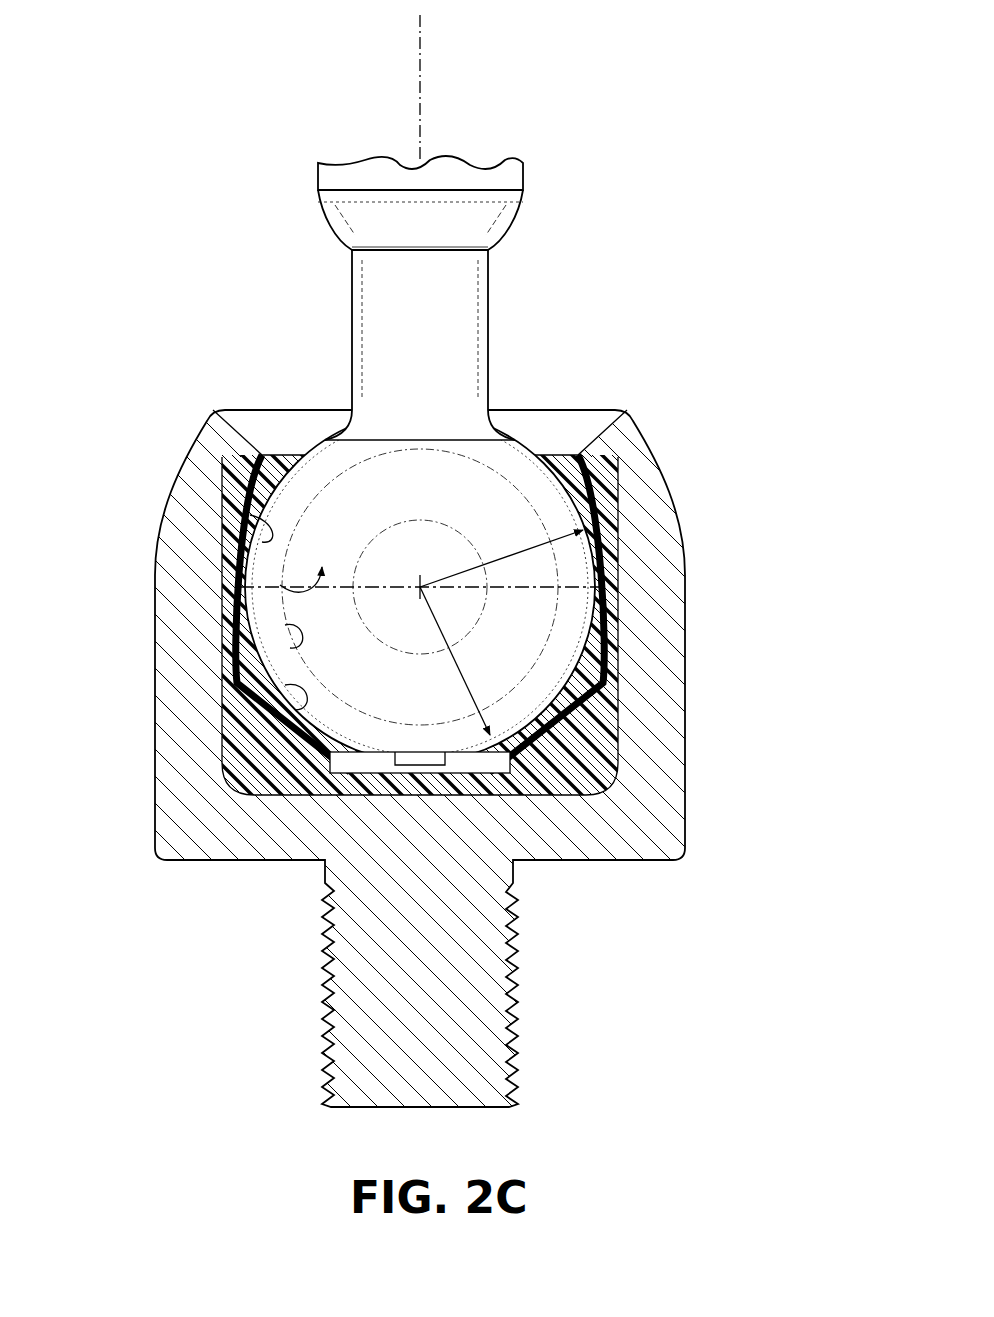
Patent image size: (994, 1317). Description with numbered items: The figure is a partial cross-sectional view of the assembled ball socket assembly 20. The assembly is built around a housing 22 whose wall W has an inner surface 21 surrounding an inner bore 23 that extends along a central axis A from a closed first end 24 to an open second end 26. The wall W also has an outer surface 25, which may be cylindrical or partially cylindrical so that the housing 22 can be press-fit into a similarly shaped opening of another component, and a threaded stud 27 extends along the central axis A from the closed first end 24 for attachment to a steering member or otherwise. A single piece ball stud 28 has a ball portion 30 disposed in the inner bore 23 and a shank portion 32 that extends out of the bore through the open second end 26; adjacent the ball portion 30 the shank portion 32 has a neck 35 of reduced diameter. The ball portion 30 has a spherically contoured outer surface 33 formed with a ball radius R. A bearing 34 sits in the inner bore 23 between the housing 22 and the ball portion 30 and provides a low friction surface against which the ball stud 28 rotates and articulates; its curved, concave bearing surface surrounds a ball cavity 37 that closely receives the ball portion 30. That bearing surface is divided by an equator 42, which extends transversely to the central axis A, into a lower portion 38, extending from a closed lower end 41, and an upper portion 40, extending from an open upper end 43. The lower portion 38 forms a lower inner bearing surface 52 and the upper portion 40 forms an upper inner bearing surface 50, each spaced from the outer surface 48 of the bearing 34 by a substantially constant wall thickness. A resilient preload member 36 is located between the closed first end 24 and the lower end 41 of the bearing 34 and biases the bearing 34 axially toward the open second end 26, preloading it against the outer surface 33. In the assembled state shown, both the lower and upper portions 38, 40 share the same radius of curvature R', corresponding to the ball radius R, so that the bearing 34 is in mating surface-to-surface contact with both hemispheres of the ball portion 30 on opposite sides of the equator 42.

The central axis A is at (420, 78).
The ball socket assembly 20 is at (706, 244).
The inner surface 21 is at (262, 540).
The housing 22 is at (690, 755).
The inner bore 23 is at (316, 403).
The closed first end 24 is at (548, 828).
The outer surface 25 is at (690, 680).
The open second end 26 is at (545, 425).
The threaded stud 27 is at (518, 1022).
The ball stud 28 is at (548, 138).
The ball portion 30 is at (433, 570).
The shank portion 32 is at (318, 176).
The spherically contoured outer surface 33 is at (280, 585).
The bearing 34 is at (628, 622).
The neck 35 is at (375, 305).
The preload member 36 is at (265, 760).
The ball cavity 37 is at (542, 470).
The lower portion 38 is at (285, 625).
The upper portion 40 is at (258, 505).
The closed lower end 41 is at (337, 745).
The equator 42 is at (513, 590).
The open upper end 43 is at (568, 455).
The outer surface 48 is at (620, 505).
The upper inner bearing surface 50 is at (572, 504).
The lower inner bearing surface 52 is at (285, 685).
The ball radius R is at (452, 661).
The radius of curvature R' is at (501, 541).
The wall W is at (668, 638).